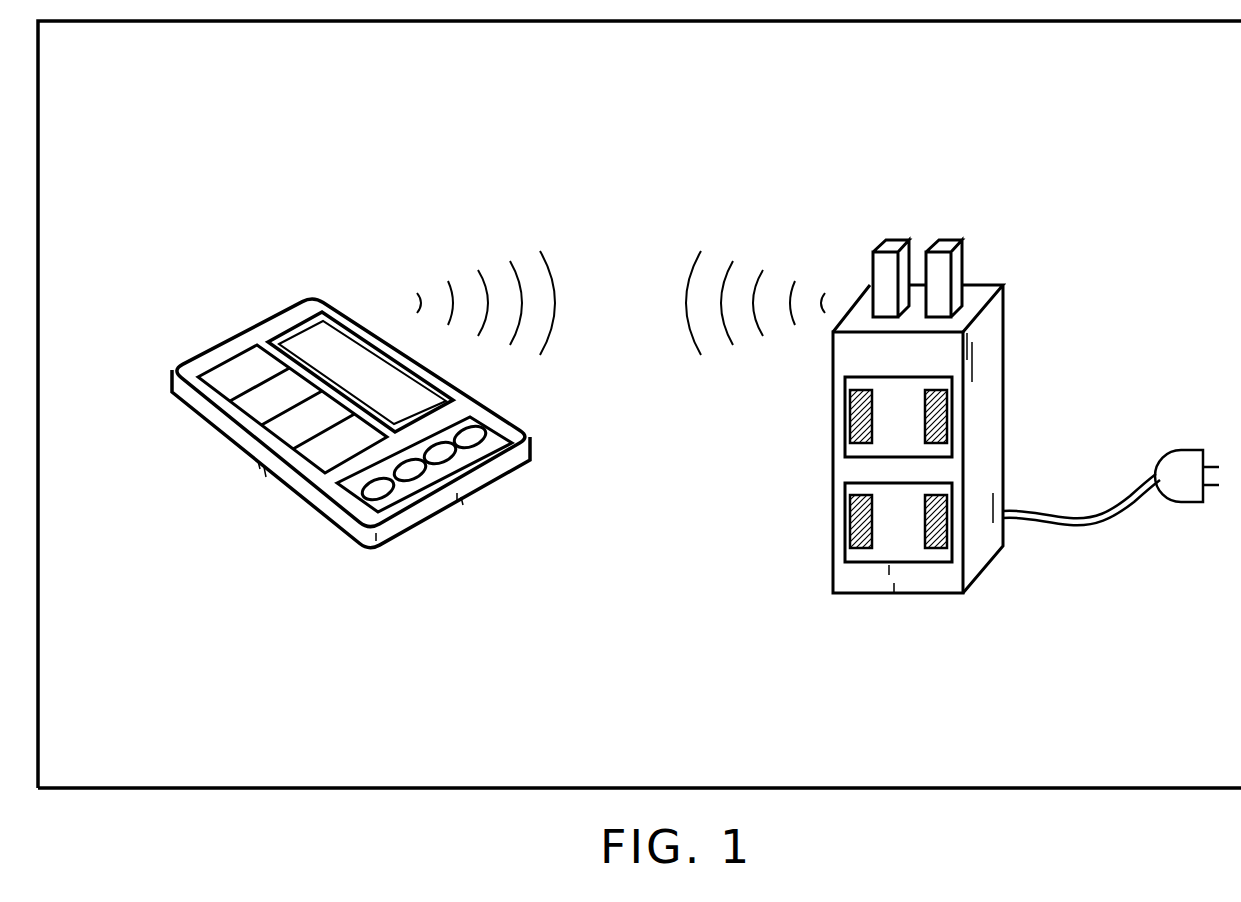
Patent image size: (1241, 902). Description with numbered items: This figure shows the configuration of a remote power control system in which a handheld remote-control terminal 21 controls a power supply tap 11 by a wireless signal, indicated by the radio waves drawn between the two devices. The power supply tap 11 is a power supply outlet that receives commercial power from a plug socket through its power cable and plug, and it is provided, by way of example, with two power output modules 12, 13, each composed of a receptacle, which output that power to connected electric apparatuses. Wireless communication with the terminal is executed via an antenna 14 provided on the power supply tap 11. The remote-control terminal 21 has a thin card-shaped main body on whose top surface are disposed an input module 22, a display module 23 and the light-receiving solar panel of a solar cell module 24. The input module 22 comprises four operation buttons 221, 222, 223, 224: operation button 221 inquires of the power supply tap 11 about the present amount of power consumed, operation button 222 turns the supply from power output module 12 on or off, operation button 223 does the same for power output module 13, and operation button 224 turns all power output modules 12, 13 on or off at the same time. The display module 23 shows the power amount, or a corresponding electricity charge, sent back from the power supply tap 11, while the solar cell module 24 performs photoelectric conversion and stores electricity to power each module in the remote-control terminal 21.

The power supply tap 11 is at (944, 416).
The power output module 12 is at (947, 411).
The power output module 13 is at (947, 502).
The antenna 14 is at (948, 239).
The remote-control terminal 21 is at (248, 463).
The input module 22 is at (436, 502).
The operation button 221 is at (483, 453).
The operation button 222 is at (445, 463).
The operation button 223 is at (417, 477).
The operation button 224 is at (385, 495).
The display module 23 is at (293, 323).
The solar cell module 24 is at (228, 358).